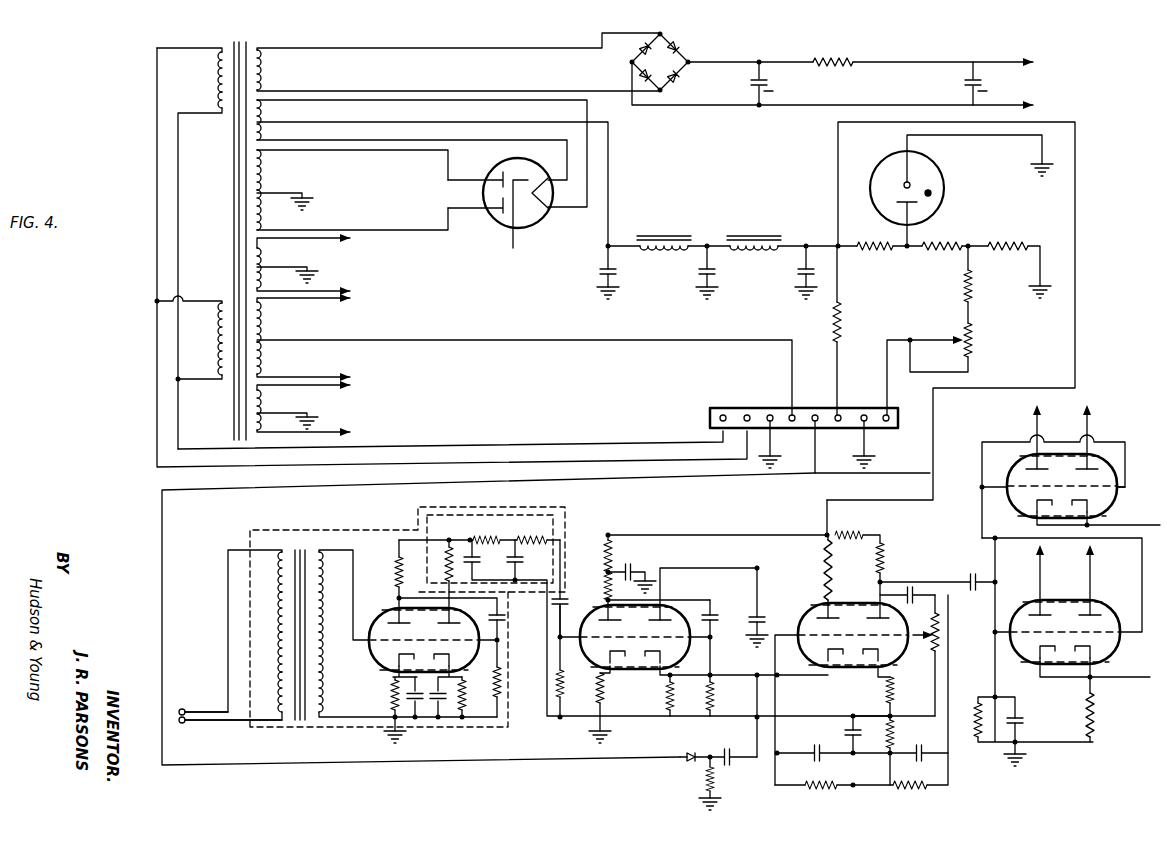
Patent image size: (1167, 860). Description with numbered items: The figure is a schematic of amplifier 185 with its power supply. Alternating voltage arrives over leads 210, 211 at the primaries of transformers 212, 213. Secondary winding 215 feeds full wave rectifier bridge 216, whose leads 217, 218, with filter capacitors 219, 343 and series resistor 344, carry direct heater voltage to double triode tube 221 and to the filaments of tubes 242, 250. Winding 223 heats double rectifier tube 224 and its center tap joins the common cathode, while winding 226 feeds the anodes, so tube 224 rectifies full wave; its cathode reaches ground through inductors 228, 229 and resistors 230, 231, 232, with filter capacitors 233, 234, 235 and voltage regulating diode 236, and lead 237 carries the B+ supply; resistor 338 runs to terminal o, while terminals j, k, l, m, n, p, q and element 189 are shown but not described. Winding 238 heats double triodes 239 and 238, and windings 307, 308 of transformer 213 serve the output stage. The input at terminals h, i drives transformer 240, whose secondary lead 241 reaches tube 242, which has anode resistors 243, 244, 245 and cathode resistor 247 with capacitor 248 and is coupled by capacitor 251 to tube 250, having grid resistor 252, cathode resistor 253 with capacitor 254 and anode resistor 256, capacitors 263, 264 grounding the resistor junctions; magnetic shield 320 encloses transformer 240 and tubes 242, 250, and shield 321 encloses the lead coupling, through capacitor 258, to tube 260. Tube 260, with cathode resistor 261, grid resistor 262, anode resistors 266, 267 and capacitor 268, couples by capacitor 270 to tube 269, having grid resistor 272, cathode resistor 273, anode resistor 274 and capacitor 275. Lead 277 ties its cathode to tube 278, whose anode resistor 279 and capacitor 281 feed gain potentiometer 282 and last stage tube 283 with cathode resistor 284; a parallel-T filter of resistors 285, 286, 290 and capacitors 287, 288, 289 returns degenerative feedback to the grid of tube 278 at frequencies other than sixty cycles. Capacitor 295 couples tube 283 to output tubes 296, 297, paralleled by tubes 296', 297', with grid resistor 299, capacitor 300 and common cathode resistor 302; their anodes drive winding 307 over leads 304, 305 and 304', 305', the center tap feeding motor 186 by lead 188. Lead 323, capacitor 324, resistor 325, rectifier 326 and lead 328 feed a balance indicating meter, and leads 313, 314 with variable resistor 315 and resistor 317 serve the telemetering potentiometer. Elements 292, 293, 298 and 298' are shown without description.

The amplifier 185 is at (674, 531).
The motor 186 is at (225, 712).
The lead 188 is at (492, 342).
The ground connection 189 is at (770, 445).
The lead 210 is at (548, 442).
The lead 211 is at (548, 461).
The transformer 212 is at (242, 48).
The transformer 213 is at (238, 439).
The first secondary winding 215 is at (263, 79).
The full wave rectifier bridge 216 is at (682, 44).
The lead 217 is at (878, 60).
The lead 218 is at (877, 105).
The filter capacitor 219 is at (773, 85).
The double triode tube 221 is at (369, 666).
The second secondary winding 223 is at (263, 120).
The double rectifier tube 224 is at (505, 228).
The third secondary winding 226 is at (263, 185).
The filter inductor 228 is at (671, 255).
The filter inductor 229 is at (762, 254).
The resistor 230 is at (903, 245).
The resistor 231 is at (941, 242).
The resistor 232 is at (1008, 242).
The first filter capacitor 233 is at (594, 277).
The second filter capacitor 234 is at (694, 278).
The third filter capacitor 235 is at (794, 278).
The voltage regulating diode 236 is at (938, 172).
The lead 237 is at (1075, 322).
The fourth secondary winding 238 is at (263, 265).
The double triode 239 is at (589, 670).
The transformer 240 is at (296, 550).
The lead 241 is at (354, 575).
The triode vacuum tube 242 is at (395, 619).
The resistor 243 is at (397, 560).
The resistor 244 is at (482, 538).
The resistor 245 is at (530, 538).
The resistor 247 is at (392, 702).
The capacitor 248 is at (416, 706).
The triode vacuum tube 250 is at (495, 600).
The capacitor 251 is at (505, 624).
The resistor 252 is at (503, 672).
The resistor 253 is at (445, 706).
The capacitor 254 is at (460, 712).
The resistor 256 is at (448, 551).
The capacitor 258 is at (563, 600).
The triode vacuum tube 260 is at (563, 621).
The resistor 261 is at (604, 692).
The resistor 262 is at (558, 695).
The capacitor 263 is at (472, 562).
The capacitor 264 is at (515, 562).
The resistor 266 is at (605, 572).
The resistor 267 is at (612, 549).
The capacitor 268 is at (634, 566).
The triode vacuum tube 269 is at (673, 610).
The capacitor 270 is at (713, 618).
The resistor 272 is at (713, 698).
The resistor 273 is at (665, 702).
The resistor 274 is at (822, 555).
The capacitor 275 is at (760, 618).
The lead 277 is at (720, 675).
The triode vacuum tube 278 is at (822, 616).
The resistor 279 is at (830, 574).
The capacitor 281 is at (915, 591).
The gain regulating potentiometer 282 is at (942, 648).
The triode vacuum tube 283 is at (897, 692).
The resistor 284 is at (887, 698).
The resistor 285 is at (915, 789).
The resistor 286 is at (818, 789).
The capacitor 287 is at (850, 731).
The capacitor 288 is at (915, 756).
The capacitor 289 is at (812, 758).
The resistor 290 is at (898, 732).
The resistor 292 is at (885, 569).
The dropping resistor 293 is at (854, 534).
The capacitor 295 is at (974, 586).
The triode vacuum tube 296 is at (1057, 617).
The triode vacuum tube 297 is at (1062, 585).
The cathode 298 is at (1097, 666).
The resistor 299 is at (956, 710).
The capacitor 300 is at (1017, 722).
The common resistor 302 is at (1094, 718).
The lead 304 is at (668, 484).
The lead 305 is at (692, 454).
The first secondary winding 307 is at (261, 331).
The second secondary winding 308 is at (263, 409).
The lead 313 is at (868, 449).
The lead 314 is at (900, 339).
The variable resistor 315 is at (975, 334).
The resistor 317 is at (962, 285).
The magnetic shield 320 is at (269, 728).
The shield 321 is at (566, 515).
The lead 323 is at (758, 760).
The capacitor 324 is at (726, 756).
The resistor 325 is at (706, 778).
The rectifier 326 is at (679, 756).
The lead 328 is at (454, 763).
The resistor 338 is at (845, 307).
The filter capacitor 343 is at (987, 84).
The resistor 344 is at (825, 60).
The triode vacuum tube 296' is at (1051, 480).
The triode vacuum tube 297' is at (1140, 470).
The cathode 298' is at (1098, 511).
The lead 304' is at (1014, 435).
The lead 305' is at (1110, 435).
The input terminal h is at (179, 701).
The input terminal i is at (180, 730).
The terminal j is at (721, 414).
The terminal k is at (745, 414).
The terminal l is at (768, 414).
The terminal m is at (792, 413).
The terminal n is at (817, 414).
The terminal o is at (839, 414).
The terminal p is at (865, 414).
The terminal q is at (893, 414).